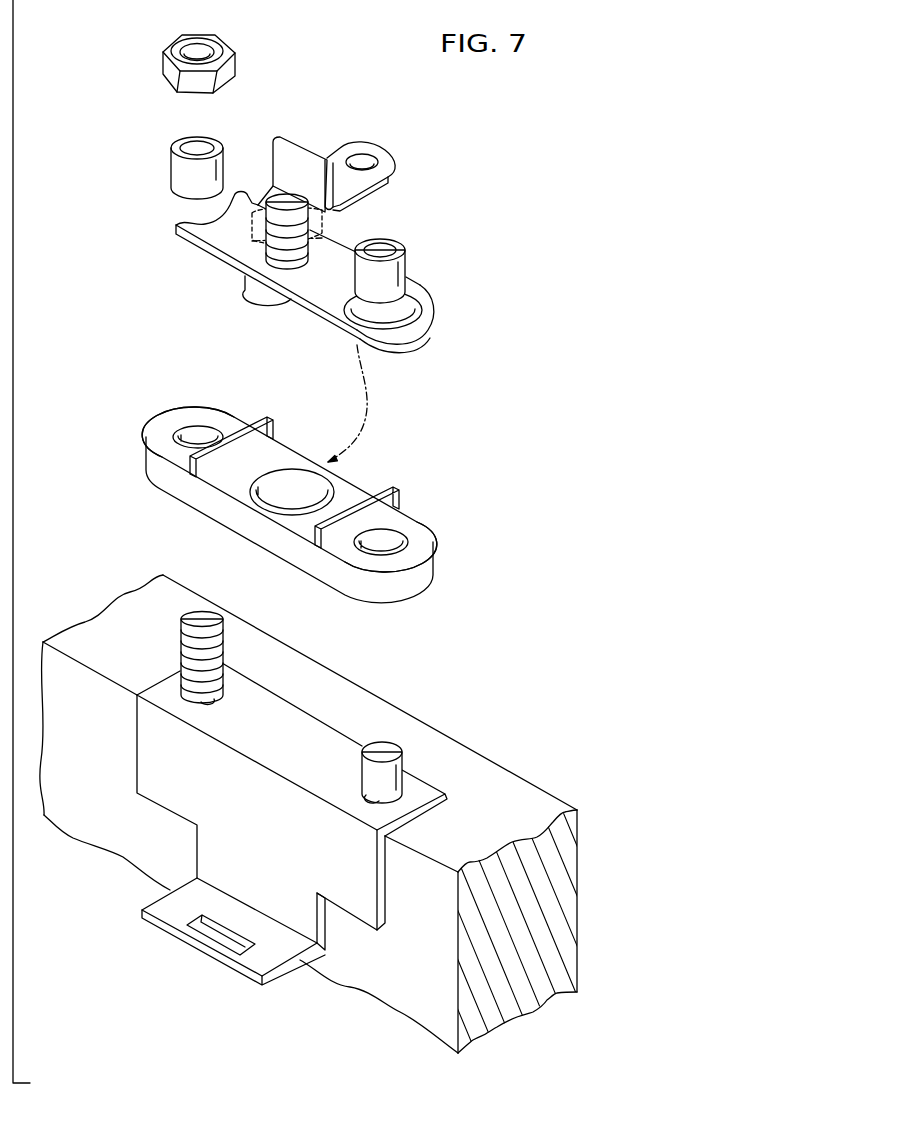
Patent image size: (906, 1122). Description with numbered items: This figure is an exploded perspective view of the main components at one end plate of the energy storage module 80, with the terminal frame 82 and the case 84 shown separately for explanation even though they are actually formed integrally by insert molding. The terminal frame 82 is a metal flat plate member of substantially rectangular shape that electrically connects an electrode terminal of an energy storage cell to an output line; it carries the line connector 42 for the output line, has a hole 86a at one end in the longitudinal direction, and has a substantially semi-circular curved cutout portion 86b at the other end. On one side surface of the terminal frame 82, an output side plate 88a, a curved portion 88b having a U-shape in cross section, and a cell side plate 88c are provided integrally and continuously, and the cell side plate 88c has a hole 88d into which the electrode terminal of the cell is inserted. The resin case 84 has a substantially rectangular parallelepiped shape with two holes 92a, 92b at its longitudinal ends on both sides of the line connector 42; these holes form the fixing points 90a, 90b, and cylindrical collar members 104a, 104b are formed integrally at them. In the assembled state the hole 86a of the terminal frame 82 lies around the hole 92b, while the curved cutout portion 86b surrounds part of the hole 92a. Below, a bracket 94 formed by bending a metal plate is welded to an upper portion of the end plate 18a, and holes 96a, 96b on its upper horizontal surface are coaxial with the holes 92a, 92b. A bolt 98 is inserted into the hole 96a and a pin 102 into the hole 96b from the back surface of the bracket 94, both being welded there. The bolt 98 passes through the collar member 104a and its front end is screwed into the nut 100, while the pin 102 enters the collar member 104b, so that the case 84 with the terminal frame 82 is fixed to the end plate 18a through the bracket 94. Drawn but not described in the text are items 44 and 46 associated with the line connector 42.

The energy storage module 80 is at (503, 84).
The nut 100 is at (162, 62).
The collar member 104a is at (180, 172).
The terminal frame 82 is at (284, 282).
The hole 86a is at (397, 313).
The curved cutout portion 86b is at (207, 220).
The output side plate 88a is at (265, 188).
The curved portion 88b is at (343, 186).
The cell side plate 88c is at (362, 148).
The hole 88d is at (370, 160).
The line connector 42 is at (140, 255).
The threaded shaft 44 is at (282, 217).
The bolt head 46 is at (262, 243).
The collar member 104b is at (406, 266).
The case 84 is at (311, 505).
The fixing point 90a is at (160, 412).
The fixing point 90b is at (440, 532).
The hole 92a is at (203, 434).
The hole 92b is at (382, 552).
The end plate 18a is at (390, 1000).
The bracket 94 is at (293, 714).
The bolt 98 is at (203, 614).
The pin 102 is at (396, 750).
The hole 96a is at (206, 697).
The hole 96b is at (377, 798).